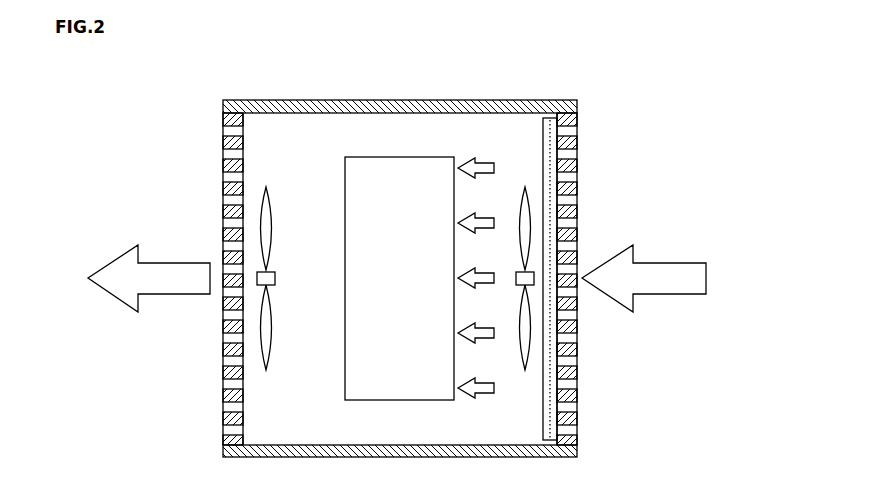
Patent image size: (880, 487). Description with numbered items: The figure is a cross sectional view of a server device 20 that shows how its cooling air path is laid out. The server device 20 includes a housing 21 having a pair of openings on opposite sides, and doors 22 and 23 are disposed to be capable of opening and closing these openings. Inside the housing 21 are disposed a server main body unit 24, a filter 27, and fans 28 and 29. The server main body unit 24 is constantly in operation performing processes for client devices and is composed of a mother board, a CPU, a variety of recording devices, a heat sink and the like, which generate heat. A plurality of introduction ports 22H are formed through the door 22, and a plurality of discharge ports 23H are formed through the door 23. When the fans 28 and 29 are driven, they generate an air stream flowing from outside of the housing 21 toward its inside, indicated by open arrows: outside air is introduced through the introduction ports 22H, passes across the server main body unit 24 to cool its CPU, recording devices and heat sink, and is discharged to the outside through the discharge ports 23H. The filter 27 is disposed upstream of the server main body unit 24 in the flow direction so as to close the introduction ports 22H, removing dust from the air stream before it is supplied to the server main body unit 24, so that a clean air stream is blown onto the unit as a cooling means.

The server device 20 is at (399, 248).
The housing 21 is at (401, 100).
The door 22 is at (578, 185).
The introduction port 22H is at (578, 176).
The door 23 is at (225, 185).
The discharge port 23H is at (225, 177).
The server main body unit 24 is at (390, 290).
The filter 27 is at (548, 118).
The fan 28 is at (525, 190).
The fan 29 is at (266, 187).